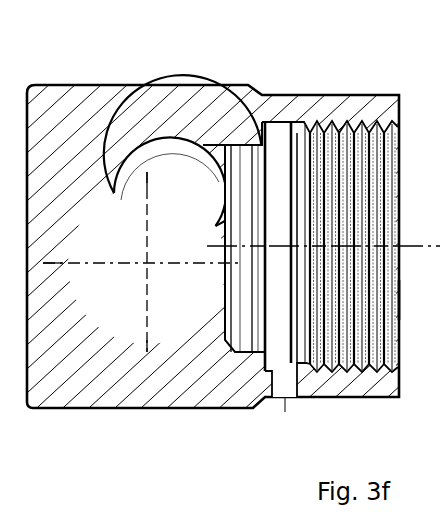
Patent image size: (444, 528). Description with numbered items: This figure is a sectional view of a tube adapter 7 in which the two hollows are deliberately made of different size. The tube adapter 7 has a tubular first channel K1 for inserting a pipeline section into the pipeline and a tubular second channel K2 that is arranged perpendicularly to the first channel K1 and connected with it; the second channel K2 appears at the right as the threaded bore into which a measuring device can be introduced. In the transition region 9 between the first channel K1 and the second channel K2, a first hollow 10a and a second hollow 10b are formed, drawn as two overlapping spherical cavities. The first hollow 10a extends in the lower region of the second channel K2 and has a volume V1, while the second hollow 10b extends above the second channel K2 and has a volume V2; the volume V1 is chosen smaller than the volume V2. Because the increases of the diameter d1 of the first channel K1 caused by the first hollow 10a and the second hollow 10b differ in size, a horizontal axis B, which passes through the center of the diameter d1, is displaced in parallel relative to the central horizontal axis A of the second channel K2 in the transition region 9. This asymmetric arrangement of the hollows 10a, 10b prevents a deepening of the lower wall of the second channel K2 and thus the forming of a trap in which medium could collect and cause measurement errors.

The tube adapter 7 is at (84, 0).
The first hollow 10a is at (176, 346).
The second hollow 10b is at (184, 166).
The volume of the first hollow V1 is at (141, 364).
The volume of the second hollow V2 is at (170, 128).
The transition region 9 is at (205, 323).
The first channel K1 is at (120, 284).
The second channel K2 is at (380, 366).
The central horizontal axis of the second channel A is at (52, 254).
The horizontal axis through the center of the first diameter B is at (323, 233).
The diameter of the first channel d1 is at (159, 262).